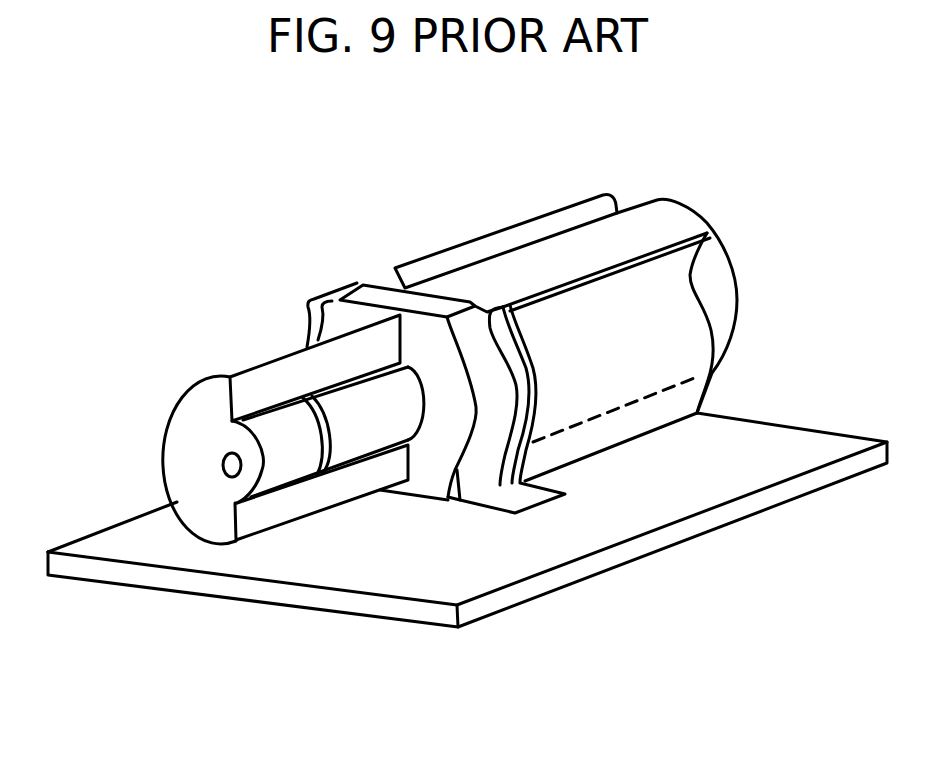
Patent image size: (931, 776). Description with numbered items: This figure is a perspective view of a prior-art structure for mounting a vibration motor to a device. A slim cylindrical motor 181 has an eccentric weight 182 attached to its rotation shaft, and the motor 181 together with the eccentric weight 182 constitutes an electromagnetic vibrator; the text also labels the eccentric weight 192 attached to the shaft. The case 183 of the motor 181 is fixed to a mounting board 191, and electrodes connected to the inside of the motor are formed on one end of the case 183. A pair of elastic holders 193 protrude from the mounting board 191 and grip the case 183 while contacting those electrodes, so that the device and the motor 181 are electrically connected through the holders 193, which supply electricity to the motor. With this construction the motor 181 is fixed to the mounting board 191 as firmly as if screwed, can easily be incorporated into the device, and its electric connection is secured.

The slim cylindrical motor 181 is at (673, 232).
The eccentric weight 182 is at (187, 423).
The case 183 is at (497, 282).
The mounting board 191 is at (367, 582).
The eccentric weight 192 is at (625, 358).
The elastic holders 193 is at (322, 300).